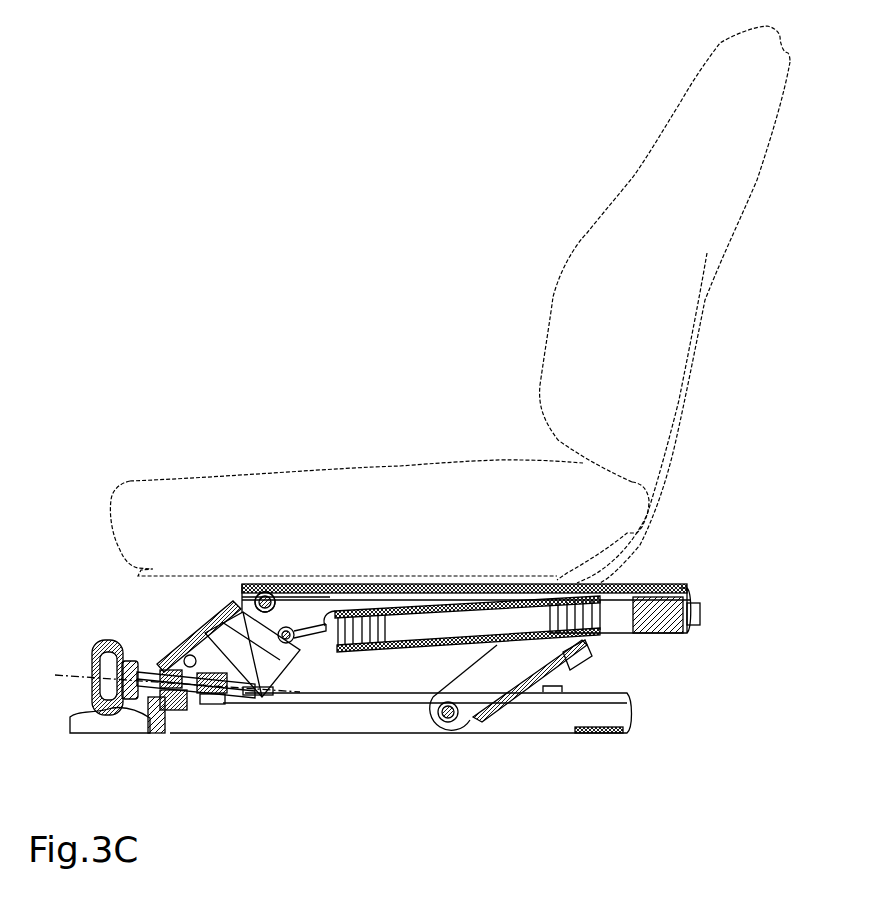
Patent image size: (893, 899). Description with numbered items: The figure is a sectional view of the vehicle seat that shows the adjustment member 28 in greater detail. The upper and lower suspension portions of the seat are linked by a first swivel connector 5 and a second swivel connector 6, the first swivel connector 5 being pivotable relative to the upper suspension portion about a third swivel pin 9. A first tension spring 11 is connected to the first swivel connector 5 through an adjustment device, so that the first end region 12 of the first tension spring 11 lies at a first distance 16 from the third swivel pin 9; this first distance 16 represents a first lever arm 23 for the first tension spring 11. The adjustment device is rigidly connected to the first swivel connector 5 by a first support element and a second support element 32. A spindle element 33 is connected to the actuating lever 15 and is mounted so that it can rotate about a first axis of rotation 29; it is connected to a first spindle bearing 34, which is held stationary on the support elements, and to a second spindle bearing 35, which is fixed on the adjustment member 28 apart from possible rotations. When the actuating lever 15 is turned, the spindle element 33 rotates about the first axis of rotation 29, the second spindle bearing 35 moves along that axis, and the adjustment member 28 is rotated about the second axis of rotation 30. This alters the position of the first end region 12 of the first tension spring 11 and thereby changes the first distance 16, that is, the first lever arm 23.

The first swivel connector 5 is at (210, 628).
The second swivel connector 6 is at (480, 690).
The third swivel pin 9 is at (247, 625).
The first tension spring 11 is at (383, 608).
The first end region 12 is at (300, 626).
The actuating lever 15 is at (106, 652).
The first distance 16 is at (256, 518).
The first lever arm 23 is at (267, 592).
The adjustment member 28 is at (232, 630).
The first axis of rotation 29 is at (66, 674).
The second axis of rotation 30 is at (185, 657).
The second support element 32 is at (185, 690).
The spindle element 33 is at (148, 700).
The first spindle bearing 34 is at (162, 700).
The second spindle bearing 35 is at (213, 702).